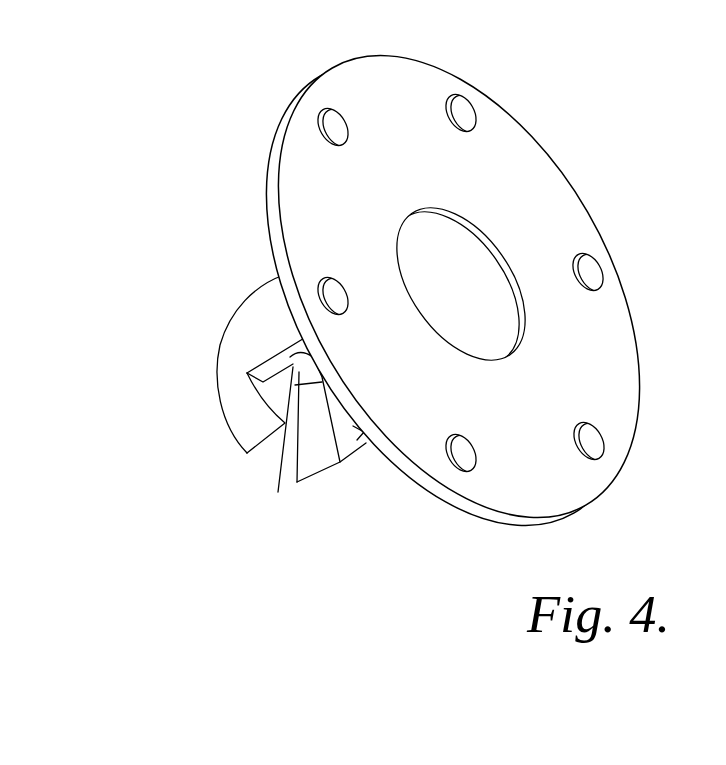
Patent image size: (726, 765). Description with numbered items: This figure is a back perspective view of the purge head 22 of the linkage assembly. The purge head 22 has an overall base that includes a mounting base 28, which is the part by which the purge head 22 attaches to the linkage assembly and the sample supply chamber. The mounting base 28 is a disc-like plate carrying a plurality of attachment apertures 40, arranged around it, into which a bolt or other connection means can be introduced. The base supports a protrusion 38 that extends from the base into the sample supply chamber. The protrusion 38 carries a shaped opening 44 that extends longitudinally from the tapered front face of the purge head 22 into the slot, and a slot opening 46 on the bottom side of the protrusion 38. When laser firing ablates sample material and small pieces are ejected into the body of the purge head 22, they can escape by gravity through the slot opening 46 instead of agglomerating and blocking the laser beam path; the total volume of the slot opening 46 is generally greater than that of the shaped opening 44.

The purge head 22 is at (424, 294).
The mounting base 28 is at (422, 479).
The protrusion 38 is at (221, 341).
The attachment apertures 40 is at (323, 111).
The shaped opening 44 is at (258, 449).
The slot opening 46 is at (278, 492).